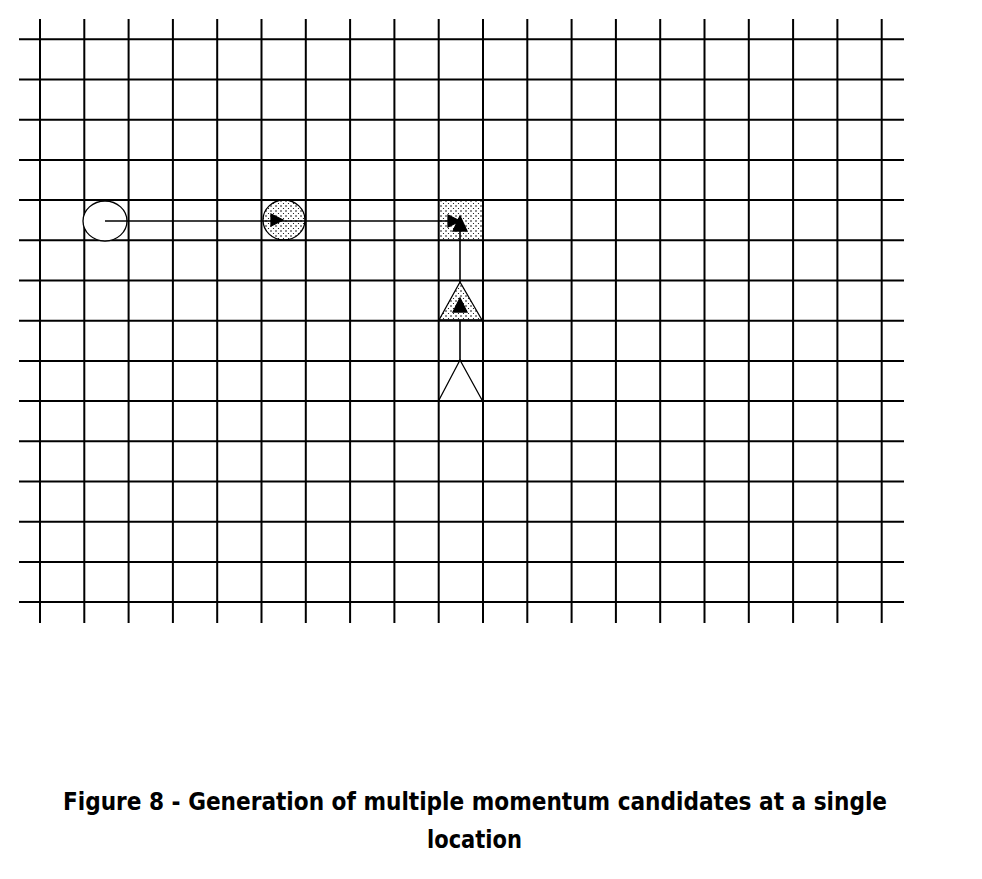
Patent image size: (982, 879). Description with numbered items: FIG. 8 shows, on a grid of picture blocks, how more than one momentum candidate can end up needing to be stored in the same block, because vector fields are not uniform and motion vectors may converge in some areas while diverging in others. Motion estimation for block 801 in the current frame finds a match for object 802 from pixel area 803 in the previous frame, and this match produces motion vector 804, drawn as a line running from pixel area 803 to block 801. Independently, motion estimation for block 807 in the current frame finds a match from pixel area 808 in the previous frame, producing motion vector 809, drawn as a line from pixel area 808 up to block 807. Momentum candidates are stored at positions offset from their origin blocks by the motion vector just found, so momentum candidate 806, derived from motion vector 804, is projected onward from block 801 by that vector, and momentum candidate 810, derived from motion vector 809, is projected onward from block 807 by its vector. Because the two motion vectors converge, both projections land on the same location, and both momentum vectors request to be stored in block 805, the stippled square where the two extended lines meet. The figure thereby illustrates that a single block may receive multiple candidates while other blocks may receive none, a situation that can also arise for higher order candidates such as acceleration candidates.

The block 801 is at (273, 240).
The object 802 is at (292, 228).
The pixel area 803 is at (105, 241).
The motion vector 804 is at (150, 221).
The block 805 is at (485, 210).
The momentum candidate 806 is at (374, 218).
The block 807 is at (482, 320).
The pixel area 808 is at (484, 380).
The motion vector 809 is at (460, 340).
The momentum candidate 810 is at (460, 259).